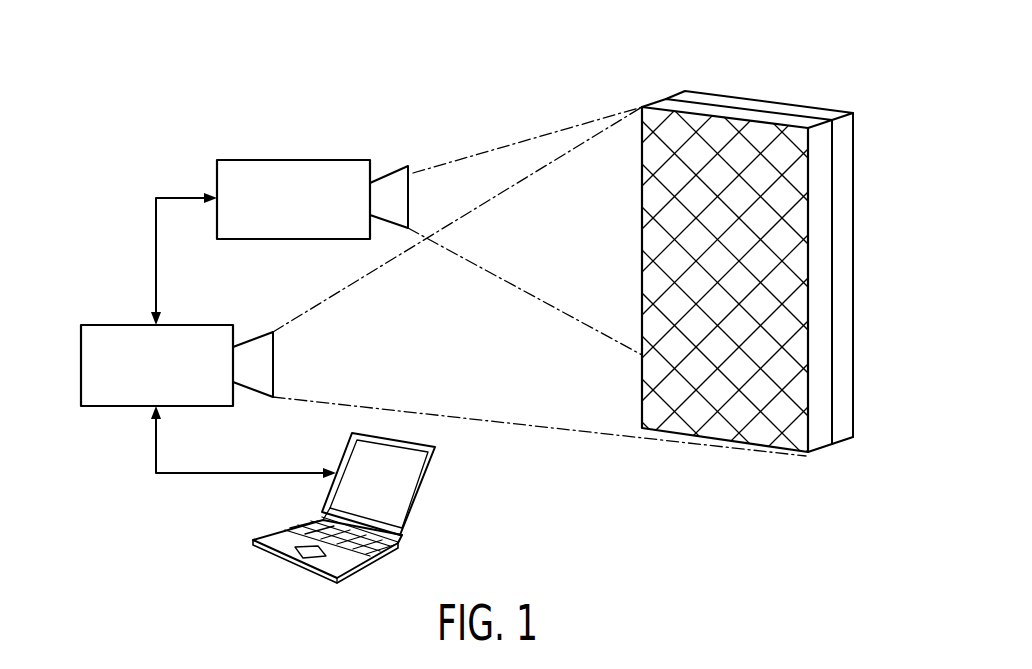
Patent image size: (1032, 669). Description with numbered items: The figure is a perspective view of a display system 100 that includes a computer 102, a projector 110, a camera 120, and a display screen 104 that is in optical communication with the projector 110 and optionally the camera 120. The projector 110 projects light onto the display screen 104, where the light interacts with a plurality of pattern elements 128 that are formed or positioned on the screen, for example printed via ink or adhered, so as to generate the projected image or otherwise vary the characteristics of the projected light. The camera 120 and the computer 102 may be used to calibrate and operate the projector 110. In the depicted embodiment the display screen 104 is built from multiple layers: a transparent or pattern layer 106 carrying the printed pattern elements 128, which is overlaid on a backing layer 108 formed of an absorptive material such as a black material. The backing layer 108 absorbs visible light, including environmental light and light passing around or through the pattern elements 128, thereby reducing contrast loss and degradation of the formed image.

The display system 100 is at (578, 74).
The computer 102 is at (288, 530).
The display screen 104 is at (668, 450).
The transparent layer 106 is at (712, 108).
The backing layer 108 is at (843, 323).
The projector 110 is at (81, 365).
The camera 120 is at (291, 159).
The pattern elements 128 is at (762, 382).